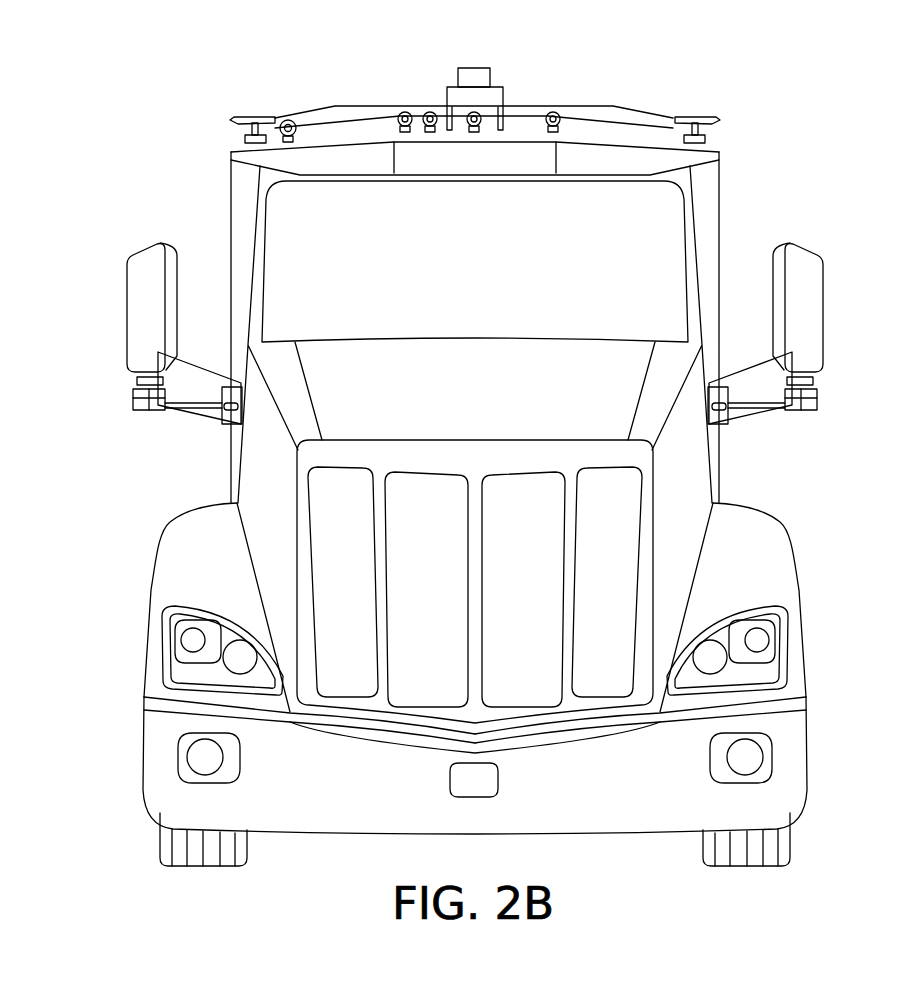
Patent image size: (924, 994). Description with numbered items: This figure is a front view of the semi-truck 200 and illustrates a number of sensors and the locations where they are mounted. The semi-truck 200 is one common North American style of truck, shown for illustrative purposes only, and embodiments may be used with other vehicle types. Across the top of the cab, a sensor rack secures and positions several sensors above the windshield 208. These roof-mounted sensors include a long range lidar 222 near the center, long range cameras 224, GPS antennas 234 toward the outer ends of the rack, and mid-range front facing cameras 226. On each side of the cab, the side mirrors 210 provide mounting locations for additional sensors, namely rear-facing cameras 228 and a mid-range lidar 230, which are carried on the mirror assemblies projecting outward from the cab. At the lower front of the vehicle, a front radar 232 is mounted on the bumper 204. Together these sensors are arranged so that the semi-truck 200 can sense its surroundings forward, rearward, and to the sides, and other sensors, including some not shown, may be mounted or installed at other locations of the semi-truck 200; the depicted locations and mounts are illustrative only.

The semi-truck 200 is at (176, 85).
The bumper 204 is at (588, 805).
The windshield 208 is at (690, 246).
The side mirrors 210 is at (152, 243).
The long range lidar 222 is at (474, 72).
The long range cameras 224 is at (404, 112).
The mid-range front facing cameras 226 is at (474, 111).
The rear-facing cameras 228 is at (183, 410).
The mid-range lidar 230 is at (132, 399).
The front radar 232 is at (470, 780).
The GPS antennas 234 is at (255, 117).